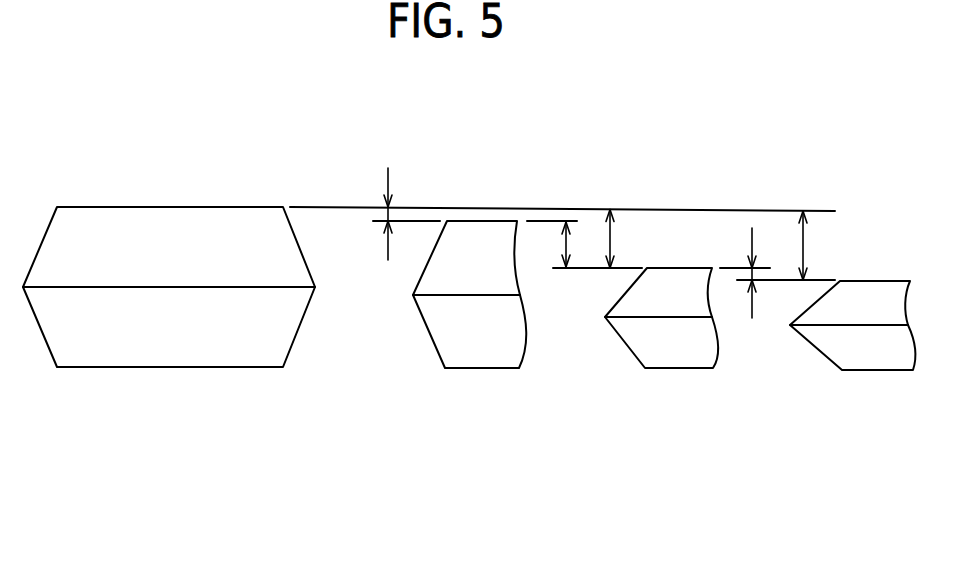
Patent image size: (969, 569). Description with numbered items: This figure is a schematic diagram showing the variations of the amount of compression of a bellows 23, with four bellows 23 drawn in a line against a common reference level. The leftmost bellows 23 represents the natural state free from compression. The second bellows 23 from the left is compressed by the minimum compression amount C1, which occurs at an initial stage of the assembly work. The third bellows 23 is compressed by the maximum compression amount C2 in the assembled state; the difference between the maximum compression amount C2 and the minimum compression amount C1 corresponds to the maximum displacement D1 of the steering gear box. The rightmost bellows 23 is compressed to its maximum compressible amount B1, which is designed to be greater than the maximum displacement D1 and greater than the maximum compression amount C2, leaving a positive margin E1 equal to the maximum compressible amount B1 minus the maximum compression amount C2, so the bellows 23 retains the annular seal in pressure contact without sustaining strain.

The bellows 23 is at (153, 352).
The minimum compression amount C1 is at (390, 210).
The maximum compression amount C2 is at (632, 239).
The maximum displacement D1 is at (563, 247).
The margin between maximum compressible amount and maximum compression amount E1 is at (750, 270).
The maximum compressible amount B1 is at (825, 245).